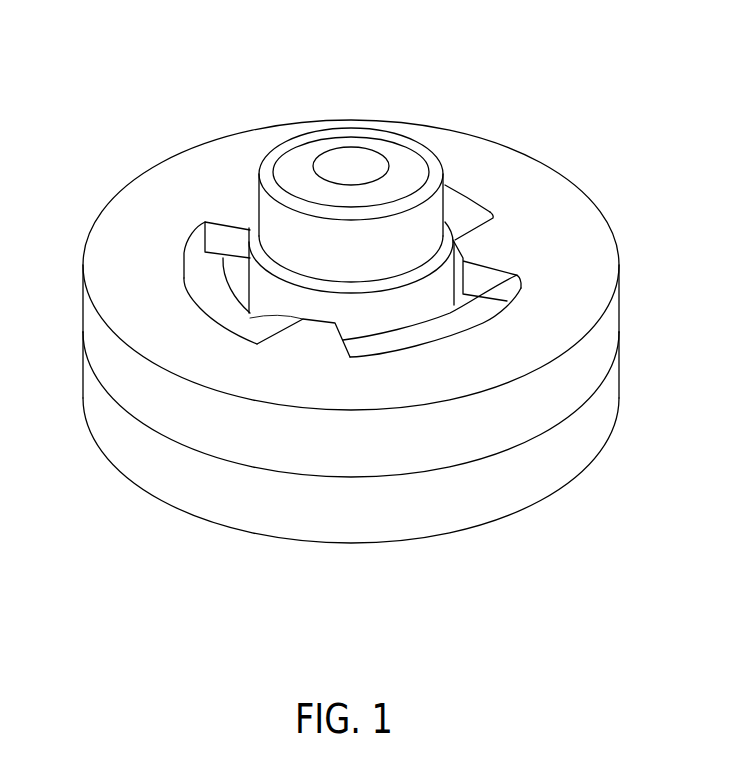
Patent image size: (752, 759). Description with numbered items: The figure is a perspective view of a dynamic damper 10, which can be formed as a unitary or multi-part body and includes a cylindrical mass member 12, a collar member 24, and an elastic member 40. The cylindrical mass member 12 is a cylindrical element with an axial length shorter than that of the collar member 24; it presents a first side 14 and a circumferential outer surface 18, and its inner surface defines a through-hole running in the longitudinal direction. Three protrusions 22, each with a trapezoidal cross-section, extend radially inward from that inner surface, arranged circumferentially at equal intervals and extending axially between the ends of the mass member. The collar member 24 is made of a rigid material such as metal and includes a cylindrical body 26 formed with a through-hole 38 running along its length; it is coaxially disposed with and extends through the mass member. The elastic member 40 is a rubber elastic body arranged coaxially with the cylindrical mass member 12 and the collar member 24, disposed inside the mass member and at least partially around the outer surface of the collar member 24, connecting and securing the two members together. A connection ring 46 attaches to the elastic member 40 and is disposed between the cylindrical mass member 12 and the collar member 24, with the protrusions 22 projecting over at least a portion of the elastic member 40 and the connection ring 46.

The dynamic damper 10 is at (364, 284).
The cylindrical mass member 12 is at (480, 157).
The first side 14 is at (576, 220).
The circumferential outer surface 18 is at (607, 327).
The protrusions 22 is at (247, 217).
The collar member 24 is at (397, 153).
The cylindrical body 26 is at (270, 175).
The through-hole 38 is at (352, 165).
The elastic member 40 is at (277, 292).
The connection ring 46 is at (473, 313).